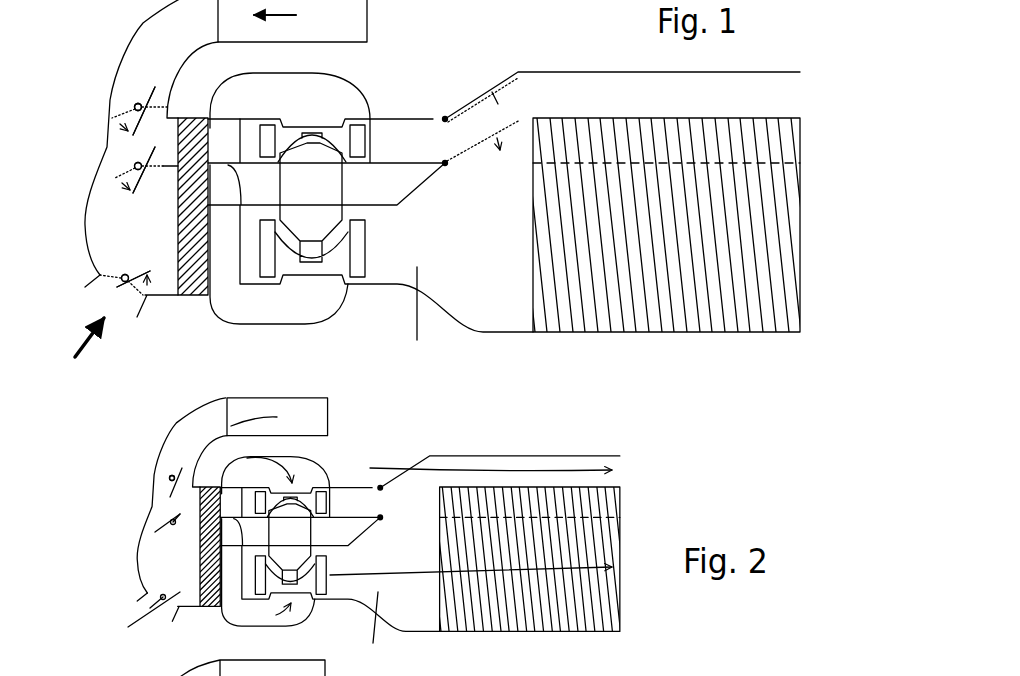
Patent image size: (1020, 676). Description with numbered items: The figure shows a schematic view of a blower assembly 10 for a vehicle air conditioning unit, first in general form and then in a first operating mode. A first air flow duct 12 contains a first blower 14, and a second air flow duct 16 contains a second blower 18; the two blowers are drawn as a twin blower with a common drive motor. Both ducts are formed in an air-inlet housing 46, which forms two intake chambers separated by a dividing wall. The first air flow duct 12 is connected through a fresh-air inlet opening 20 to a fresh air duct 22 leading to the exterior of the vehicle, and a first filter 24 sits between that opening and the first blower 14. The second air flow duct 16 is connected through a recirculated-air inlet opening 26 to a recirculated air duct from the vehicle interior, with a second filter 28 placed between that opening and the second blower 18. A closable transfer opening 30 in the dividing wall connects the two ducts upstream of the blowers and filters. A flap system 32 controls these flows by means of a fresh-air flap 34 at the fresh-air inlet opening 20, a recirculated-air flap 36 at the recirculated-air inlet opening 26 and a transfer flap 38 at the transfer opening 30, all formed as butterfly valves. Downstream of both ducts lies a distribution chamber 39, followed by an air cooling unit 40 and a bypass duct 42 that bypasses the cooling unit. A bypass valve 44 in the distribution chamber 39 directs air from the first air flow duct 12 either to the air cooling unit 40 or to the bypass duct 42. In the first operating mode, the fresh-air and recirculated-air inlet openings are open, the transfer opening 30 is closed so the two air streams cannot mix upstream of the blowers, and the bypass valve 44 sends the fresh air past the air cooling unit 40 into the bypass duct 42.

In FIG. 1, the blower assembly 10 is at (733, 362).
In FIG. 2, the blower assembly 10 is at (672, 502).
In FIG. 1, the first air flow duct 12 is at (422, 130).
In FIG. 2, the first air flow duct 12 is at (368, 495).
In FIG. 1, the first blower 14 is at (357, 140).
In FIG. 2, the first blower 14 is at (320, 498).
In FIG. 1, the second air flow duct 16 is at (317, 305).
In FIG. 2, the second air flow duct 16 is at (293, 617).
In FIG. 1, the second blower 18 is at (357, 260).
In FIG. 2, the second blower 18 is at (322, 588).
In FIG. 1, the fresh-air inlet opening 20 is at (134, 101).
In FIG. 2, the fresh-air inlet opening 20 is at (163, 476).
In FIG. 1, the fresh air duct 22 is at (173, 43).
In FIG. 2, the fresh air duct 22 is at (197, 670).
In FIG. 1, the first filter 24 is at (200, 138).
In FIG. 1, the recirculated-air inlet opening 26 is at (100, 302).
In FIG. 2, the recirculated-air inlet opening 26 is at (157, 615).
In FIG. 1, the second filter 28 is at (192, 232).
In FIG. 2, the second filter 28 is at (210, 547).
In FIG. 1, the transfer opening 30 is at (128, 198).
In FIG. 2, the transfer opening 30 is at (167, 533).
In FIG. 1, the flap system 32 is at (146, 90).
In FIG. 1, the fresh-air flap 34 is at (146, 90).
In FIG. 2, the fresh-air flap 34 is at (182, 468).
In FIG. 1, the recirculated-air flap 36 is at (117, 287).
In FIG. 2, the recirculated-air flap 36 is at (160, 608).
In FIG. 1, the transfer flap 38 is at (148, 156).
In FIG. 2, the transfer flap 38 is at (133, 527).
In FIG. 1, the distribution chamber 39 is at (492, 277).
In FIG. 2, the distribution chamber 39 is at (427, 568).
In FIG. 1, the air cooling unit 40 is at (660, 287).
In FIG. 2, the air cooling unit 40 is at (537, 610).
In FIG. 1, the bypass duct 42 is at (595, 83).
In FIG. 2, the bypass duct 42 is at (547, 462).
In FIG. 1, the bypass valve 44 is at (497, 143).
In FIG. 2, the bypass valve 44 is at (423, 483).
In FIG. 1, the air-inlet housing 46 is at (97, 265).
In FIG. 2, the air-inlet housing 46 is at (143, 585).